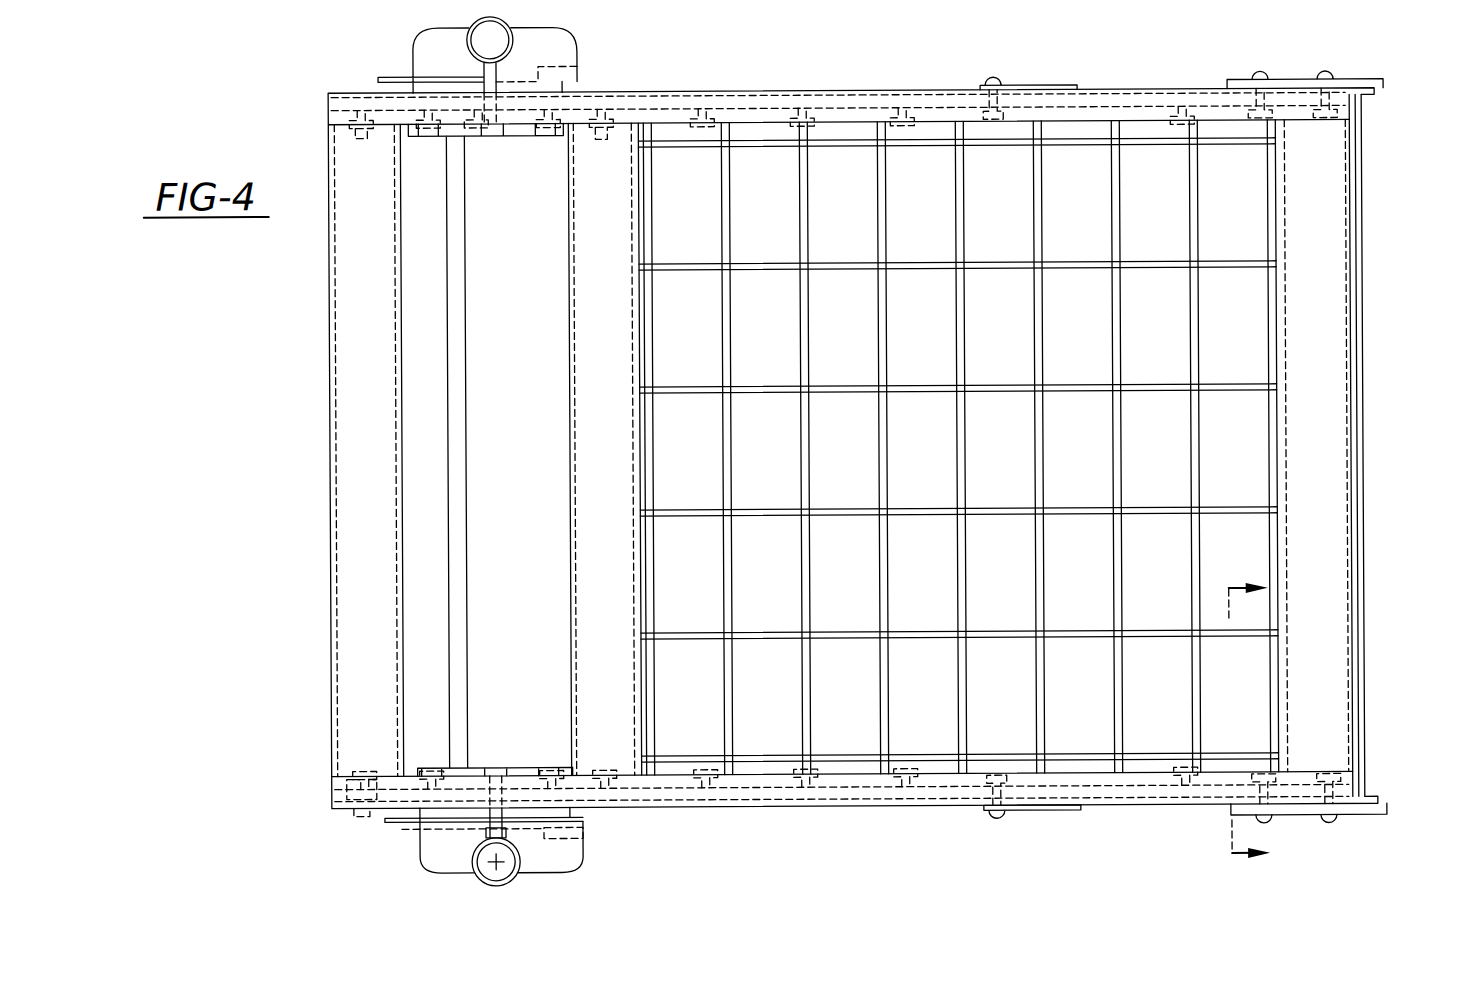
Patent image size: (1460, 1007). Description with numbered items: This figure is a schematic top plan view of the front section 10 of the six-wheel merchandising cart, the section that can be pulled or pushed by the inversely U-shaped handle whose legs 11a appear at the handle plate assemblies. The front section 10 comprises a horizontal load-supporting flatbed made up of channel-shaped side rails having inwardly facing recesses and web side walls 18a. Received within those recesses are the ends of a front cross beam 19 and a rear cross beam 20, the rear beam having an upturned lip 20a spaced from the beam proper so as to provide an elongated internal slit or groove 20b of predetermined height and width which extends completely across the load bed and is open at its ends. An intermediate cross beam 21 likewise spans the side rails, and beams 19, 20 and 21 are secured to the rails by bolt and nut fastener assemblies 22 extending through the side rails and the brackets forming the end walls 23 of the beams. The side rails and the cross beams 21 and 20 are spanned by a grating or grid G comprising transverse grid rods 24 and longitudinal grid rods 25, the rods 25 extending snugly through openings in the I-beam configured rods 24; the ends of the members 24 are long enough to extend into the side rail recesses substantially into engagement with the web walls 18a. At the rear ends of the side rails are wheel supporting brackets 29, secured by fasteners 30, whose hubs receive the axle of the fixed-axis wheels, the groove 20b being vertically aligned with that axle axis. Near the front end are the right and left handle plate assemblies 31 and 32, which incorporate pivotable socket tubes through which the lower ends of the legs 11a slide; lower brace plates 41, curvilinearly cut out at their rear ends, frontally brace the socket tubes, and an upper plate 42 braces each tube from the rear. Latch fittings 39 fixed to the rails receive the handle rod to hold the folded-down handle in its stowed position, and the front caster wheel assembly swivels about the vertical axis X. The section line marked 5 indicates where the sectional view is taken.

The front section of the cart 10 is at (305, 390).
The handle legs 11a is at (477, 52).
The web side walls 18a is at (778, 795).
The front cross beam 19 is at (348, 594).
The rear cross beam 20 is at (1338, 427).
The upturned lip 20a is at (1365, 672).
The internal slit or groove 20b is at (1352, 605).
The intermediate cross beam 21 is at (600, 662).
The bolt and nut fastener assemblies 22 is at (362, 813).
The end walls of beams 23 is at (333, 775).
The transverse grid rods 24 is at (1199, 458).
The longitudinal grid rods 25 is at (1240, 512).
The wheel supporting brackets 29 is at (1238, 80).
The fasteners 30 is at (1323, 818).
The right handle plate assembly 31 is at (385, 818).
The left handle plate assembly 32 is at (572, 49).
The latch fitting 39 is at (1050, 86).
The lower brace plates 41 is at (437, 862).
The upper plate 42 is at (585, 858).
The grating or grid G is at (1252, 342).
The vertical axis of front caster wheel assembly X is at (480, 876).
The section line 5- 5 is at (1235, 712).